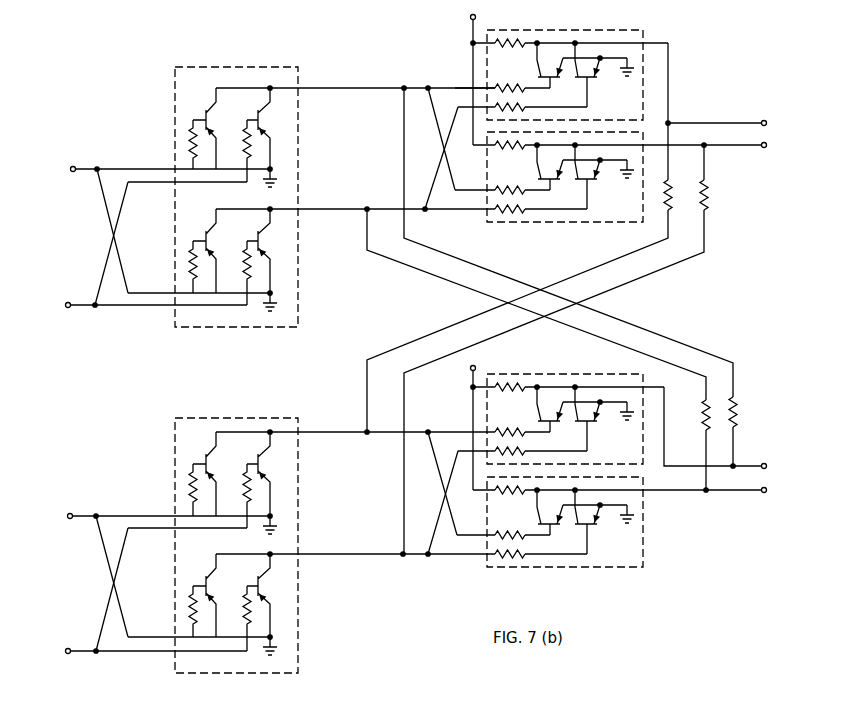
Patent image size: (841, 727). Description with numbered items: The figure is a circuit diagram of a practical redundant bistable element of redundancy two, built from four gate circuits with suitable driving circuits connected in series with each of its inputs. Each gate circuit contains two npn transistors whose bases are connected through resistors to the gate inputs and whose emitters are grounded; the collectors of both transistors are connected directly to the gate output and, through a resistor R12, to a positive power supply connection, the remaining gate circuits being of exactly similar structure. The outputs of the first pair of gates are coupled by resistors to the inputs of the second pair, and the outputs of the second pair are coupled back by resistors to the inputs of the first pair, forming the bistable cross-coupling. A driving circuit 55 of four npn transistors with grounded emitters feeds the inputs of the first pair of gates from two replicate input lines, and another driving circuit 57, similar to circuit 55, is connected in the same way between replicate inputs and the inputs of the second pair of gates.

The driving circuit 55 is at (214, 197).
The driving circuit 57 is at (176, 427).
The resistor R12 is at (511, 54).